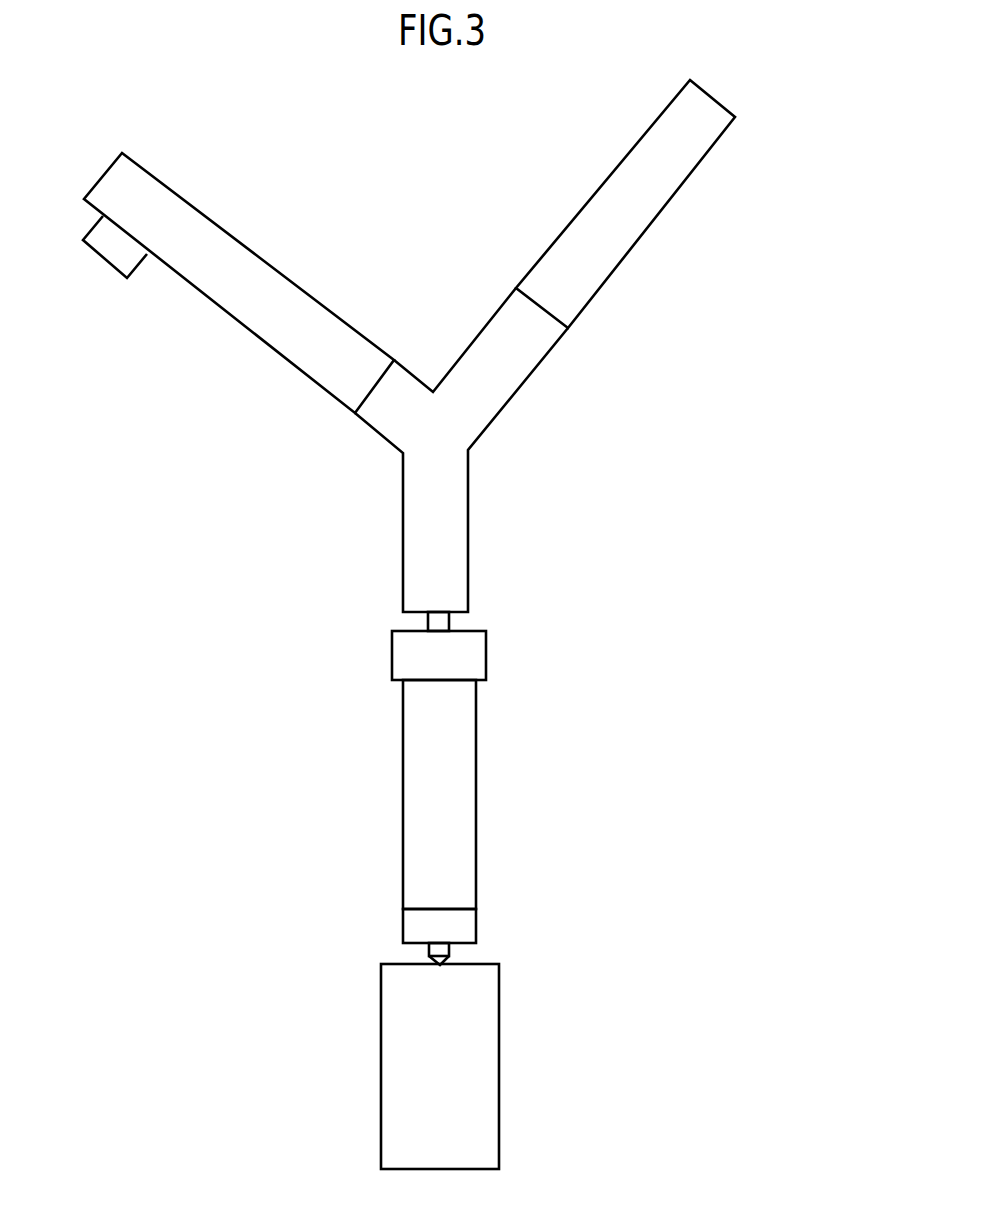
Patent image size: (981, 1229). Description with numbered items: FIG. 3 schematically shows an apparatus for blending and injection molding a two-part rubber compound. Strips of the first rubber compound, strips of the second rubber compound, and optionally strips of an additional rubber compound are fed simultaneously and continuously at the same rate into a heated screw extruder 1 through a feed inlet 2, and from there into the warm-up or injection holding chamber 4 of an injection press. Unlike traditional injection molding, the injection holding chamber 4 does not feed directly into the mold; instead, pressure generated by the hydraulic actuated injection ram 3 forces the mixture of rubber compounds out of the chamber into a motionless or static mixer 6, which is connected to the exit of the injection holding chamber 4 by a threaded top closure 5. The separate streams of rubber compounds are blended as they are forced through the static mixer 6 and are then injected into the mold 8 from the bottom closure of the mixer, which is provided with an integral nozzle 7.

The heated screw extruder 1 is at (180, 197).
The feed inlet 2 is at (103, 262).
The hydraulic actuated injection ram 3 is at (633, 220).
The injection holding chamber 4 is at (442, 515).
The top closure 5 is at (482, 653).
The static mixer 6 is at (477, 797).
The nozzle 7 is at (477, 931).
The mold 8 is at (499, 1064).